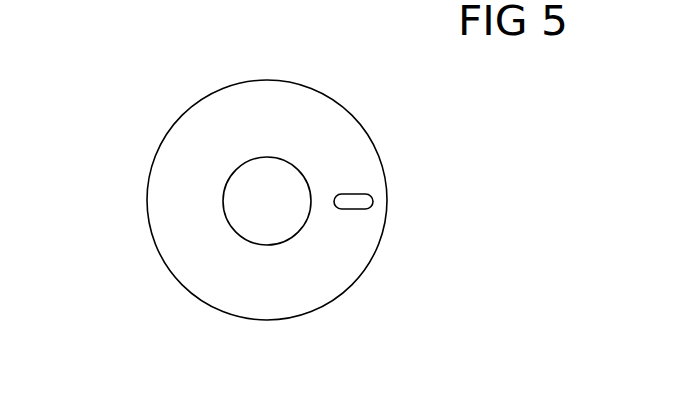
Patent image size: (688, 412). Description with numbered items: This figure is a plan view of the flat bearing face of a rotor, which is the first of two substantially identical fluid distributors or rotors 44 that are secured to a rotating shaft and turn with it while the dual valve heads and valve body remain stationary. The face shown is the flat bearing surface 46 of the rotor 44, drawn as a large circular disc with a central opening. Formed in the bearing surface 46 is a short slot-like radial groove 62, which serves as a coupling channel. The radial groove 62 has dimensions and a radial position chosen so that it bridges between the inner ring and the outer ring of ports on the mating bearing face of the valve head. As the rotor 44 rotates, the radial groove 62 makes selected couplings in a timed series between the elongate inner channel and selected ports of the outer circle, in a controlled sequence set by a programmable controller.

The first rotor 44 is at (214, 213).
The flat bearing surface 46 is at (199, 132).
The radial groove 62 is at (468, 179).